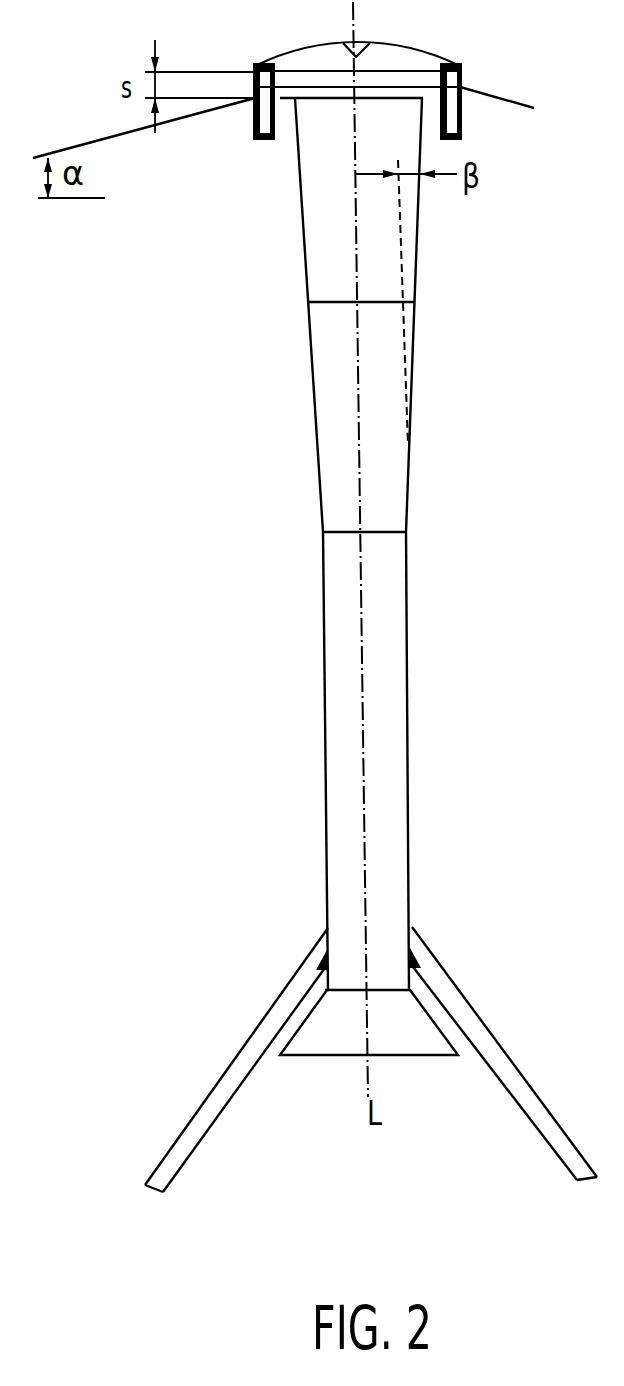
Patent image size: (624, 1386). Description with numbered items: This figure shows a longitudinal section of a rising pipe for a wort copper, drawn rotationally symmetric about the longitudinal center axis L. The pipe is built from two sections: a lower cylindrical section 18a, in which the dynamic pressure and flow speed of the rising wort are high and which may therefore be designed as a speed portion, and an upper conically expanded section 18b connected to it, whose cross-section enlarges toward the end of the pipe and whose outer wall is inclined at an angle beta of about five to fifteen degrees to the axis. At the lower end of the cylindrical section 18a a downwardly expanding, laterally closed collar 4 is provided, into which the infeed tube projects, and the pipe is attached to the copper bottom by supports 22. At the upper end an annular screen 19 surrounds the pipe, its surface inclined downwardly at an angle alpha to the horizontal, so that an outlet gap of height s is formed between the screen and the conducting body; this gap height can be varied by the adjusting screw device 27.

The collar 4 is at (417, 1020).
The cylindrical section 18a is at (393, 615).
The conically expanded section 18b is at (413, 335).
The annular screen 19 is at (202, 113).
The supports 22 is at (217, 1081).
The adjusting screw device 27 is at (460, 72).